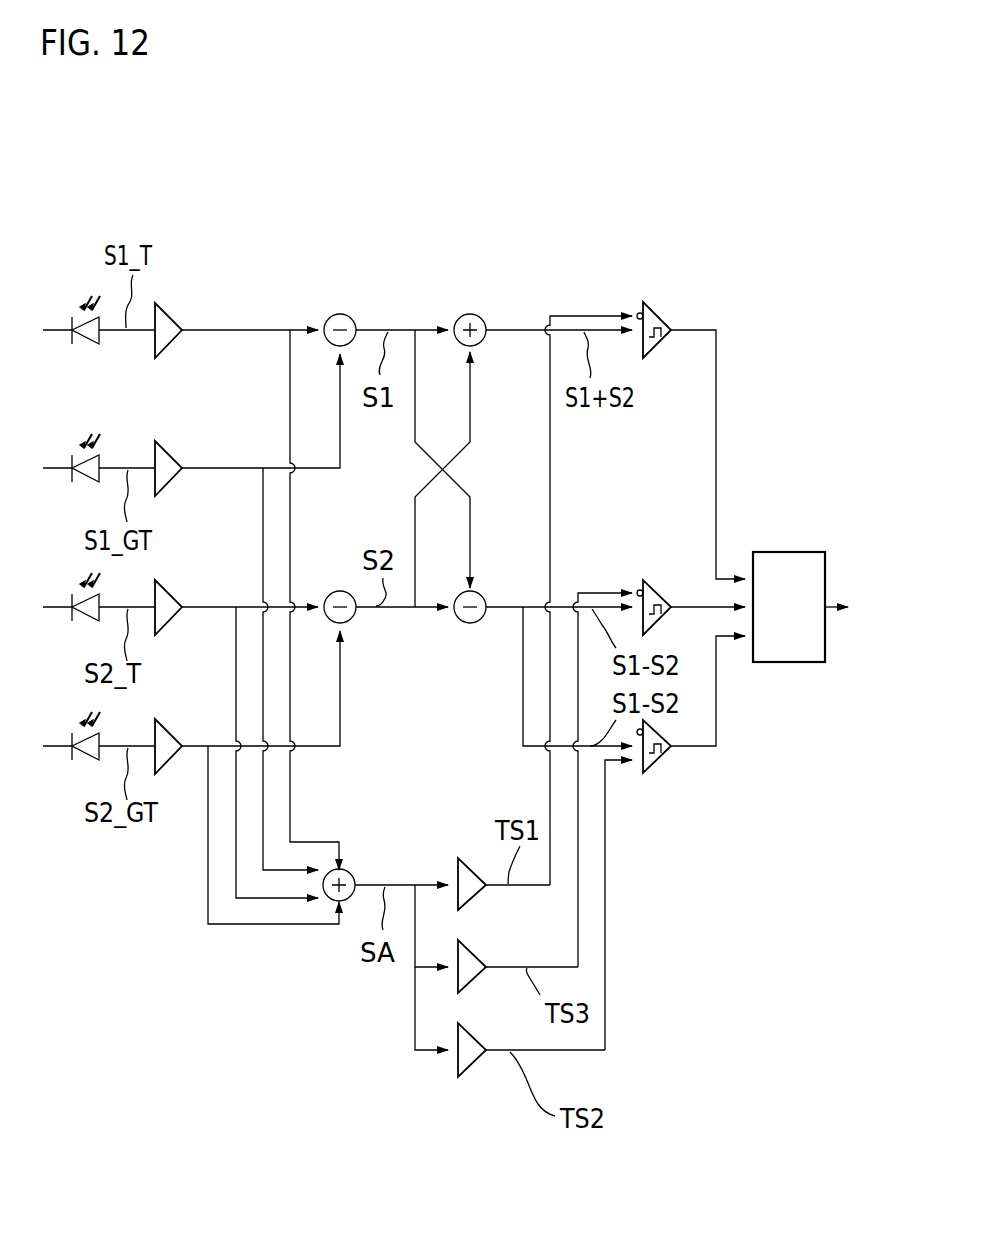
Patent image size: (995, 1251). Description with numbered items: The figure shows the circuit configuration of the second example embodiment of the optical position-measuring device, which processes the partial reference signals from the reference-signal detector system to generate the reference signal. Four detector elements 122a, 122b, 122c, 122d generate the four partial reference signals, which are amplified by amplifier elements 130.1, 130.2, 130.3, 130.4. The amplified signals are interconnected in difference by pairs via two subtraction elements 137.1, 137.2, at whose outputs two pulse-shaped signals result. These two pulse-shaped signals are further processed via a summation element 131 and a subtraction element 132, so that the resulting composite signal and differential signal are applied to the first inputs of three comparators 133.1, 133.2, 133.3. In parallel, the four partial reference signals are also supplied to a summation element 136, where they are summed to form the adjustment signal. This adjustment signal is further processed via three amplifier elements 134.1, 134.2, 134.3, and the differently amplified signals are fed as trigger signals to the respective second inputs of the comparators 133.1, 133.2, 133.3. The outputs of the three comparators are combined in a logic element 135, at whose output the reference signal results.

The detector element 122a is at (90, 347).
The detector element 122b is at (90, 485).
The detector element 122c is at (90, 624).
The detector element 122d is at (90, 763).
The amplifier element 130.1 is at (164, 326).
The amplifier element 130.2 is at (165, 465).
The amplifier element 130.3 is at (165, 604).
The amplifier element 130.4 is at (163, 742).
The subtraction element 137.1 is at (340, 314).
The subtraction element 137.2 is at (350, 620).
The summation element 131 is at (503, 272).
The subtraction element 132 is at (473, 625).
The comparator 133.1 is at (649, 345).
The comparator 133.2 is at (692, 563).
The comparator 133.3 is at (655, 757).
The amplifier element 134.1 is at (462, 870).
The amplifier element 134.2 is at (467, 952).
The amplifier element 134.3 is at (465, 1067).
The summation element 136 is at (340, 872).
The logic element 135 is at (808, 640).